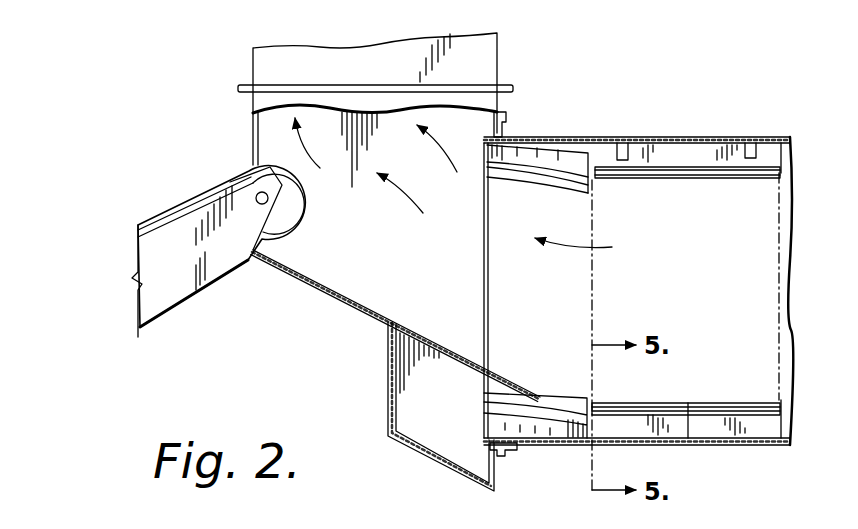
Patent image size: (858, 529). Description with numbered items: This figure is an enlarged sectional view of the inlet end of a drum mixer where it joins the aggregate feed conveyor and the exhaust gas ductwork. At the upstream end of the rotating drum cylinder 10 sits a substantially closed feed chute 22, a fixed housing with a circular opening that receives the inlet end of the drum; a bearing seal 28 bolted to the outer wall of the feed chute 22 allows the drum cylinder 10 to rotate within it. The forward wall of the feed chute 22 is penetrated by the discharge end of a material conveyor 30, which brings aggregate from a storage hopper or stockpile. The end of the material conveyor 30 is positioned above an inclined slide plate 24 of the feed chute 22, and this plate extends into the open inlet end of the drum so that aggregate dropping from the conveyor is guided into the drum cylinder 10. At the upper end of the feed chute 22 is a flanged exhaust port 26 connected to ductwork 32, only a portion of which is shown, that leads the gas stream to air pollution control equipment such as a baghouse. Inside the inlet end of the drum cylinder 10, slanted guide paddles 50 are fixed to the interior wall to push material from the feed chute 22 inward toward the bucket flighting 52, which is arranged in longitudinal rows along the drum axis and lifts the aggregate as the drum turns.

The drum cylinder 10 is at (729, 140).
The feed chute 22 is at (312, 340).
The inclined slide plate 24 is at (355, 302).
The flanged exhaust port 26 is at (490, 97).
The bearing seal 28 is at (513, 137).
The material conveyor 30 is at (213, 277).
The ductwork 32 is at (488, 50).
The slanted guide paddles 50 is at (560, 152).
The bucket flighting 52 is at (678, 160).